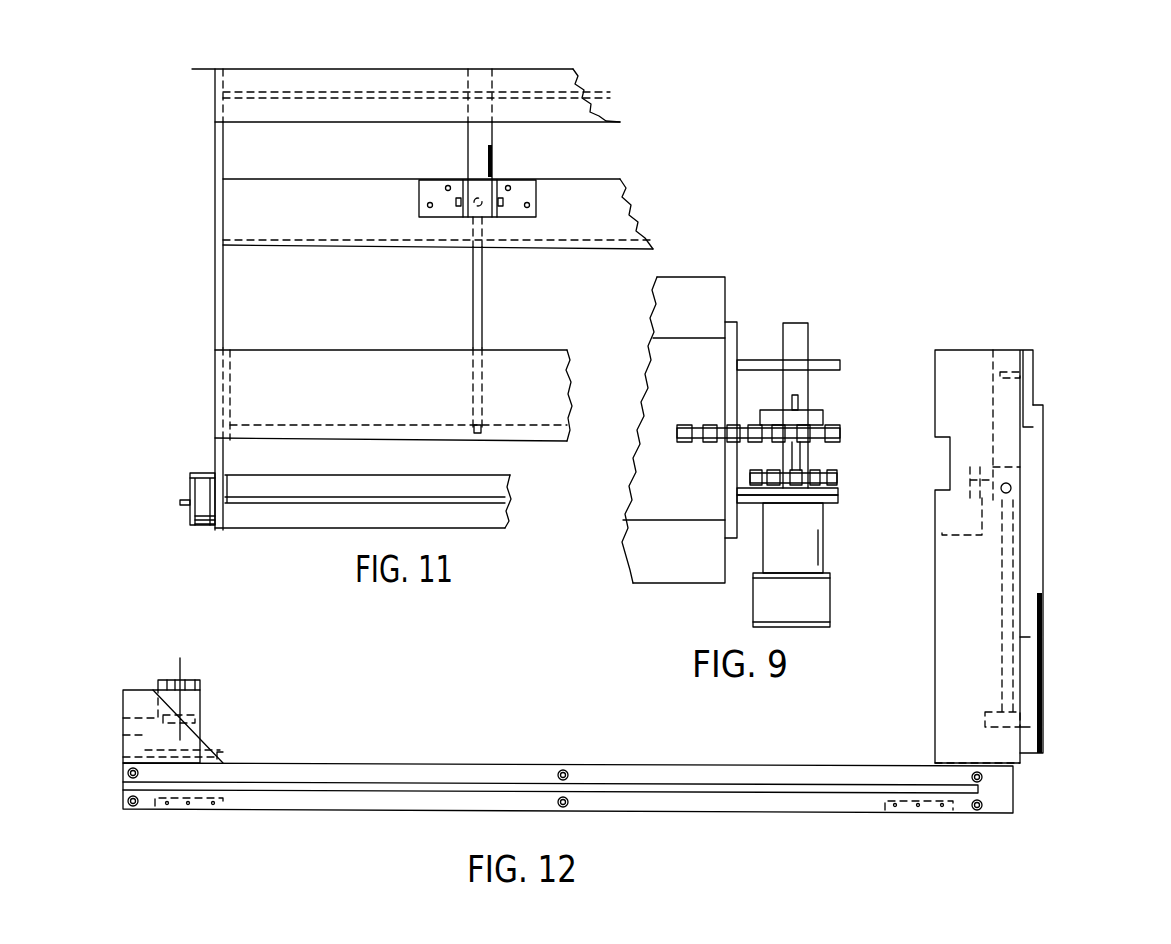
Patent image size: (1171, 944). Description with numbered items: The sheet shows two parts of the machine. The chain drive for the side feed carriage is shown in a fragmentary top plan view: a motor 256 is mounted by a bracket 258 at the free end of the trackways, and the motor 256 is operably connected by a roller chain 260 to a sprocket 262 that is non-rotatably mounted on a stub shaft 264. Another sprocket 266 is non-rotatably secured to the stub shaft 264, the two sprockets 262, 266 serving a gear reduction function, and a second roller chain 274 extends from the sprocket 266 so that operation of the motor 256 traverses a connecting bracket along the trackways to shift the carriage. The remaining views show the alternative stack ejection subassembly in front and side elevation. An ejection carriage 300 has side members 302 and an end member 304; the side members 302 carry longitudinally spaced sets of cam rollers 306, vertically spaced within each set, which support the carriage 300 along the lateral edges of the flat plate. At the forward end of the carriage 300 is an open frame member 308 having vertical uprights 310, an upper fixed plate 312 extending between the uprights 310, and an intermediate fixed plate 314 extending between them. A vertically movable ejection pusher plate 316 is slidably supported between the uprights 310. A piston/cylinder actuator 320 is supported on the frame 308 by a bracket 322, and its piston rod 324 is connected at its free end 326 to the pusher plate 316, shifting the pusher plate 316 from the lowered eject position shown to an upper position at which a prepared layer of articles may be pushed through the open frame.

In FIG. 9, the motor 256 is at (805, 545).
In FIG. 9, the bracket 258 is at (745, 505).
In FIG. 9, the roller chain 260 is at (830, 485).
In FIG. 9, the sprocket 262 is at (812, 467).
In FIG. 9, the stub shaft 264 is at (790, 377).
In FIG. 9, the sprocket 266 is at (792, 425).
In FIG. 9, the roller chain 274 is at (700, 415).
In FIG. 12, the ejection carriage 300 is at (432, 752).
In FIG. 11, the side members 302 is at (198, 462).
In FIG. 12, the side members 302 is at (747, 768).
In FIG. 12, the end member 304 is at (123, 762).
In FIG. 12, the cam rollers 306 is at (569, 775).
In FIG. 11, the open frame member 308 is at (150, 106).
In FIG. 12, the open frame member 308 is at (1050, 330).
In FIG. 11, the vertical uprights 310 is at (215, 272).
In FIG. 12, the vertical uprights 310 is at (982, 616).
In FIG. 11, the upper fixed plate 312 is at (337, 77).
In FIG. 11, the intermediate fixed plate 314 is at (368, 188).
In FIG. 11, the ejection pusher plate 316 is at (352, 360).
In FIG. 12, the ejection pusher plate 316 is at (1023, 687).
In FIG. 11, the piston/cylinder actuator 320 is at (510, 146).
In FIG. 11, the bracket 322 is at (508, 185).
In FIG. 11, the piston rod 324 is at (483, 300).
In FIG. 11, the free end 326 is at (485, 428).